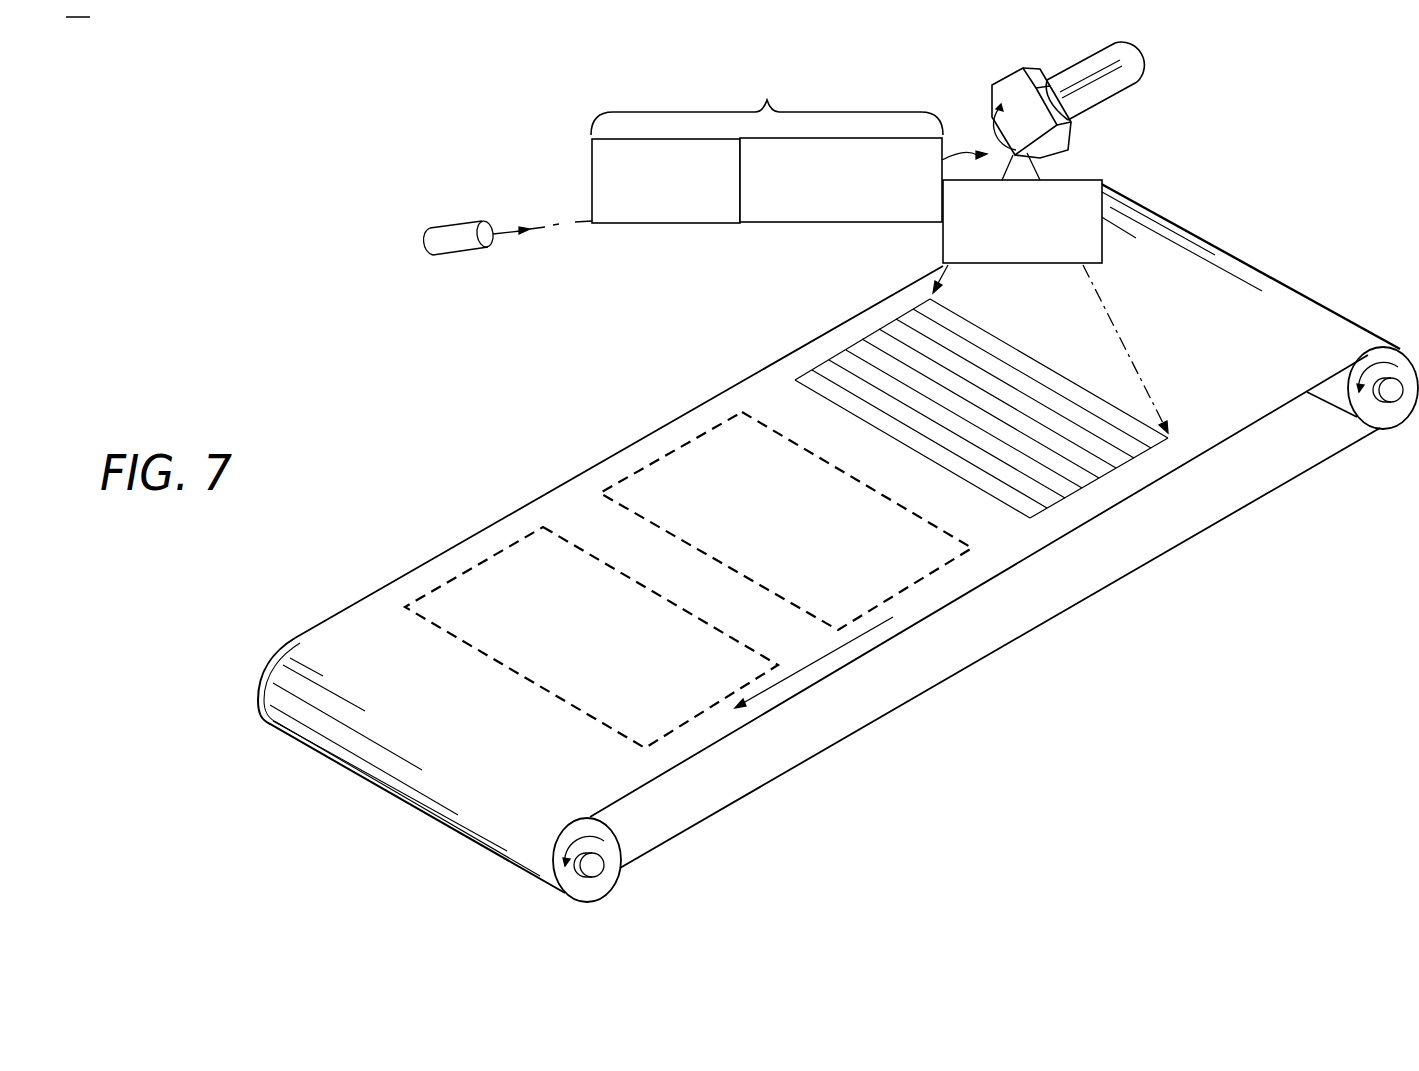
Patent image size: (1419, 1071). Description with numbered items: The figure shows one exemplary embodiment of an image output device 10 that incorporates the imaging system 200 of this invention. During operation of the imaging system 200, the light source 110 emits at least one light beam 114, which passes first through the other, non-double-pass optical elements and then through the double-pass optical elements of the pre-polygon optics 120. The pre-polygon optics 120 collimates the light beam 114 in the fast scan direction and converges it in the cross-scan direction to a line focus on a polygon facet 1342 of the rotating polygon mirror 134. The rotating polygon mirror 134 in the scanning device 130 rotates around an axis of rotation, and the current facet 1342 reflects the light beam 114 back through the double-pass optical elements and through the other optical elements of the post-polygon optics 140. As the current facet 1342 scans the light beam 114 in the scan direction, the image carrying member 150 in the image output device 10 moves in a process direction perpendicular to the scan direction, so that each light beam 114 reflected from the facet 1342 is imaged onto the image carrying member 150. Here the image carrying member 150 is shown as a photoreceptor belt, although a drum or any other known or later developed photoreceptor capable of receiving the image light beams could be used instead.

The image output device 10 is at (1287, 203).
The light source 110 is at (465, 233).
The light beam 114 is at (553, 222).
The pre-polygon optics 120 is at (789, 93).
The scanning device 130 is at (1019, 100).
The rotating polygon mirror 134 is at (997, 85).
The polygon facet 1342 is at (1044, 161).
The post-polygon optics 140 is at (945, 232).
The image carrying member 150 is at (1148, 465).
The imaging system 200 is at (610, 95).